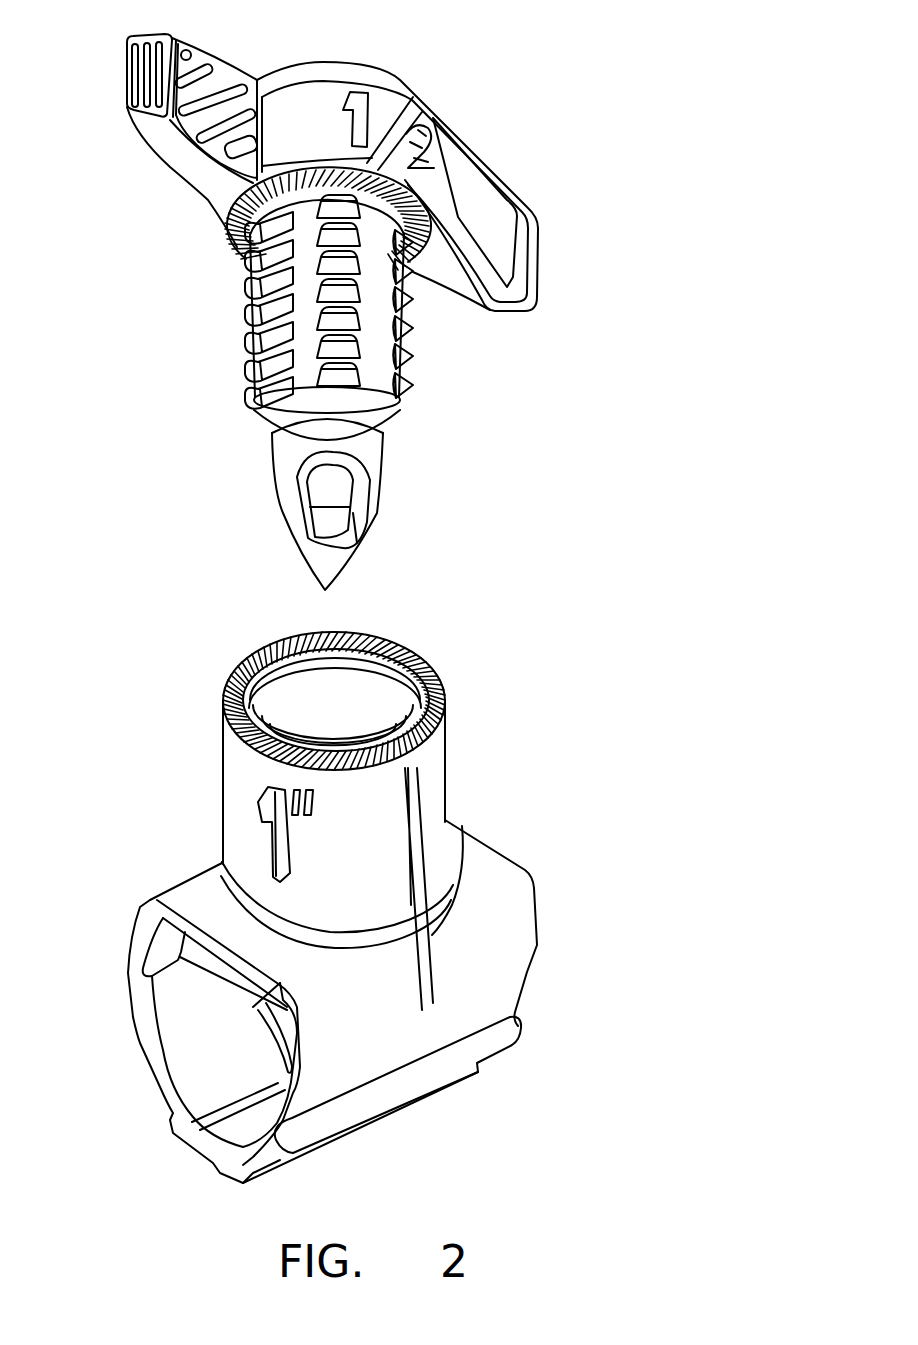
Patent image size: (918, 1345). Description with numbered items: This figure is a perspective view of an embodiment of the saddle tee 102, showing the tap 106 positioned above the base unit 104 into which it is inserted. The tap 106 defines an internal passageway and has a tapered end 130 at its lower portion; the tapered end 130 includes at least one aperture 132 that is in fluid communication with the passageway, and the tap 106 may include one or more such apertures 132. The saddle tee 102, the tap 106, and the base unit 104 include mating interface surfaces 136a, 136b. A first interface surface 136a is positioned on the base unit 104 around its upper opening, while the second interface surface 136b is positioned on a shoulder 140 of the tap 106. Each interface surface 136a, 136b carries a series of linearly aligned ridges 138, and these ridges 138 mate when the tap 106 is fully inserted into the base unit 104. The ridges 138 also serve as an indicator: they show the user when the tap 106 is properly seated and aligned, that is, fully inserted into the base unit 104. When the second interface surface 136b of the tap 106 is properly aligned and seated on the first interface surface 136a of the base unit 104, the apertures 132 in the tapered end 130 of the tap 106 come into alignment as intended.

The saddle tee 102 is at (641, 489).
The base unit 104 is at (533, 908).
The tap 106 is at (210, 203).
The tapered end 130 is at (343, 433).
The aperture 132 is at (333, 522).
The first interface surface 136a is at (227, 693).
The second interface surface 136b is at (243, 232).
The linearly aligned ridges 138 is at (438, 240).
The shoulder 140 is at (347, 167).